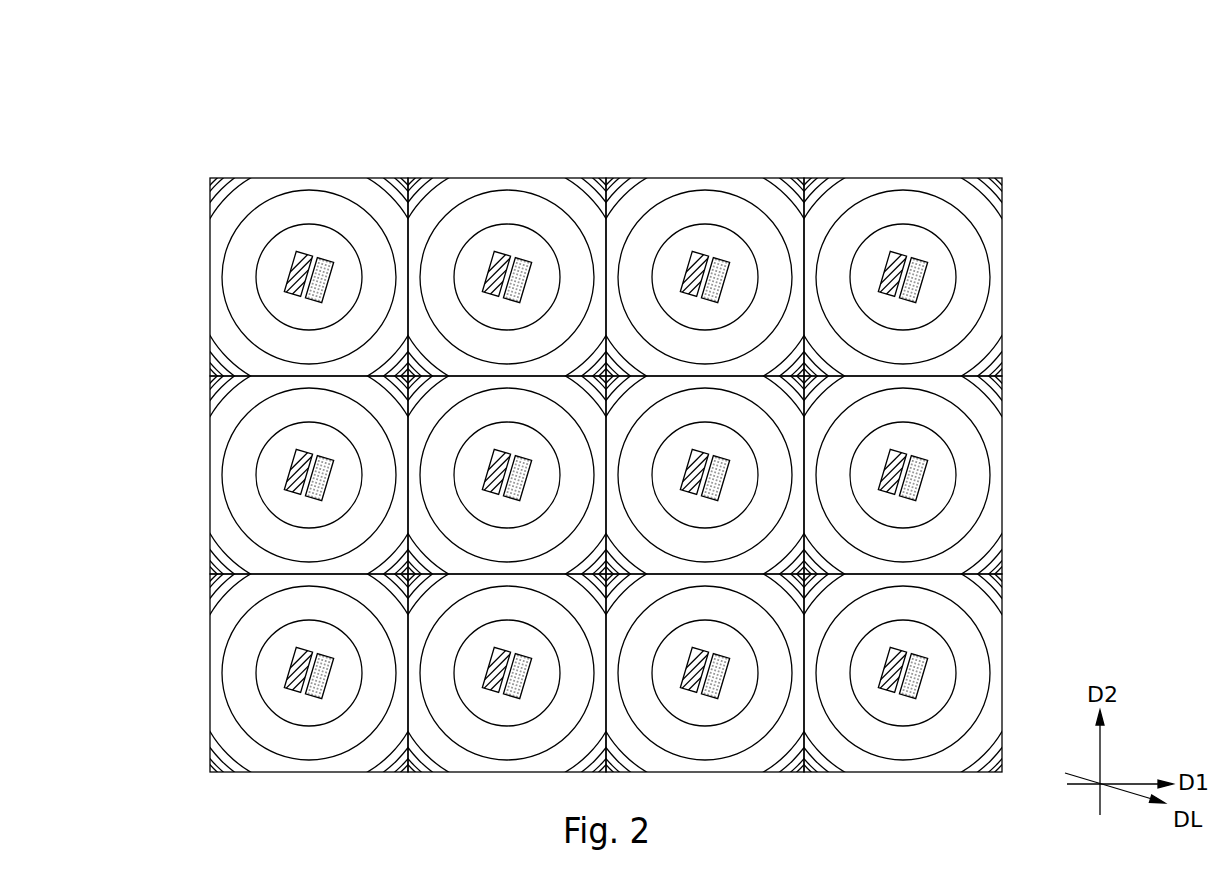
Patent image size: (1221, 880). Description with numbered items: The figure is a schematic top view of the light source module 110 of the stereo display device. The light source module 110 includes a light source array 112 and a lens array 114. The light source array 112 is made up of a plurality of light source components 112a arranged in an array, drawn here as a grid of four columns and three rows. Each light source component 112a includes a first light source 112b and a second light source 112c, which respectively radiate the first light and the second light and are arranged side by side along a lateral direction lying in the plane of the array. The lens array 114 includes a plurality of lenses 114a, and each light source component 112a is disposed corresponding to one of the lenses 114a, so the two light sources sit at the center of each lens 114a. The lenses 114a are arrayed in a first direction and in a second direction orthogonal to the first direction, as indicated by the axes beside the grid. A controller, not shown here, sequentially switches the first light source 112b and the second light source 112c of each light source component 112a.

The light source module 110 is at (84, 38).
The light source array 112 is at (545, 82).
The light source component 112a is at (375, 132).
The first light source 112b is at (301, 250).
The second light source 112c is at (333, 258).
The lens array 114 is at (141, 262).
The lens 114a is at (257, 282).